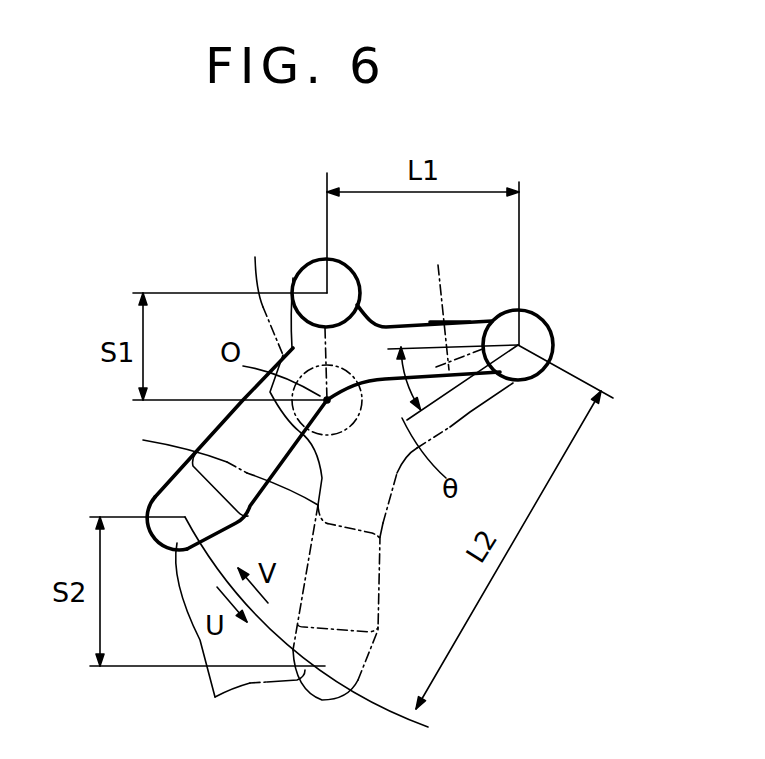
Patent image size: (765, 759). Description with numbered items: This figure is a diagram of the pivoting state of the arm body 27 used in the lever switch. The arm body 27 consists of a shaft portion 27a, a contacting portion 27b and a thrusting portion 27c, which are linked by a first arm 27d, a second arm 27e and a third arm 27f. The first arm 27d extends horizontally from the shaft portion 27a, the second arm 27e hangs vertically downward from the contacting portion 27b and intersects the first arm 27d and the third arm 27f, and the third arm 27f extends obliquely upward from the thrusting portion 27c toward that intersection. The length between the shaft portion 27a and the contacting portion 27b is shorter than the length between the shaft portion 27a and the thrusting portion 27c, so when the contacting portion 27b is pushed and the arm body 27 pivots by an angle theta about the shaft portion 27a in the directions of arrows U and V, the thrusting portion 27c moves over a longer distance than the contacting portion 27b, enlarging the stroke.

The arm body 27 is at (470, 320).
The shaft portion 27a is at (541, 333).
The contacting portion 27b is at (298, 282).
The thrusting portion 27c is at (240, 638).
The first arm 27d is at (420, 322).
The second arm 27e is at (378, 323).
The third arm 27f is at (205, 434).